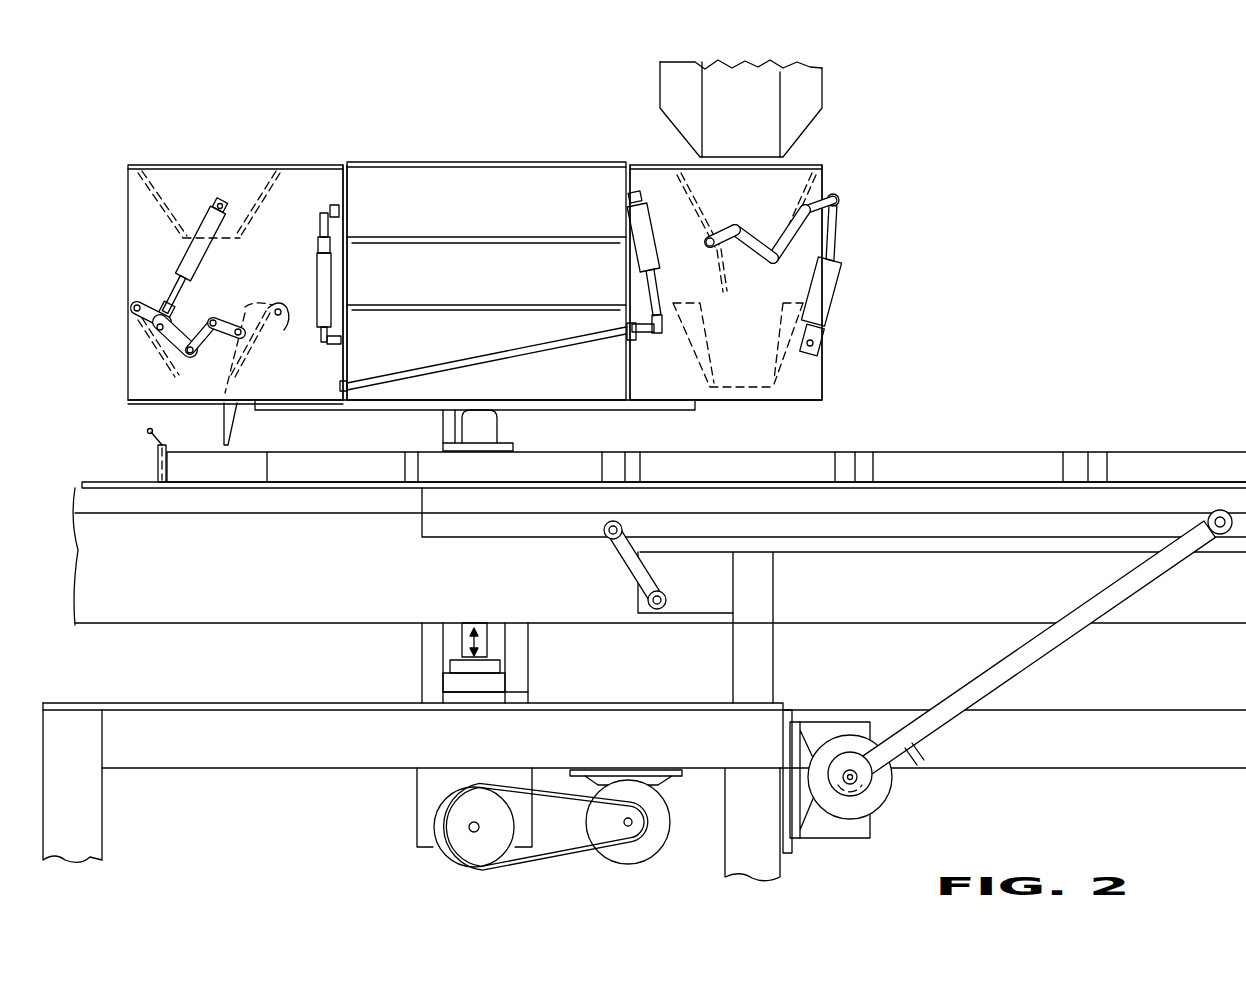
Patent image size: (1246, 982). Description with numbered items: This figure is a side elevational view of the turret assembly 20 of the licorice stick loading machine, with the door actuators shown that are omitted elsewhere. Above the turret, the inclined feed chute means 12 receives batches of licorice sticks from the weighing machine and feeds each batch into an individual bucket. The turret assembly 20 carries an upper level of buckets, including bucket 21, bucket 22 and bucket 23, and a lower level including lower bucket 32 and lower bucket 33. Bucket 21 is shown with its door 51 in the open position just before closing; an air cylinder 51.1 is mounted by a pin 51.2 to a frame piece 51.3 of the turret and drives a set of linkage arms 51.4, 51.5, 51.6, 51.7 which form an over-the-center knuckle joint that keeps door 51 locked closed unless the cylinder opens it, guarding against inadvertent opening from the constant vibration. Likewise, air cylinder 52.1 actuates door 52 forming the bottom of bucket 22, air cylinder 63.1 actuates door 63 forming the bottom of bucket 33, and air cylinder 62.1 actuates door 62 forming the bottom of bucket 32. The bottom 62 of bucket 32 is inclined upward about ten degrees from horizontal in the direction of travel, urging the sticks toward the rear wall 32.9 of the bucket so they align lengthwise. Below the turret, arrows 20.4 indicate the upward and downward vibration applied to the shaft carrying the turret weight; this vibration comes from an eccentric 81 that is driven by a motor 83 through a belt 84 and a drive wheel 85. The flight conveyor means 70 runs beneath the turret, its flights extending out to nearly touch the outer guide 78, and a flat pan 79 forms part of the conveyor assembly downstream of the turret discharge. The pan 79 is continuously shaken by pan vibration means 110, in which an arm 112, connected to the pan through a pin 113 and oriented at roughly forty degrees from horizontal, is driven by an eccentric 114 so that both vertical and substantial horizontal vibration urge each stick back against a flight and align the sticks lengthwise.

The inclined feed chute means 12 is at (814, 101).
The turret assembly 20 is at (513, 279).
The arrows indicating vibration direction 20.4 is at (487, 648).
The bucket 21 is at (812, 180).
The bucket 22 is at (469, 177).
The bucket 23 is at (278, 184).
The lower bucket 32 is at (456, 307).
The rear wall of bucket 32.9 is at (344, 356).
The lower bucket 33 is at (280, 334).
The door 51 is at (775, 267).
The air cylinder 51.1 is at (832, 282).
The pin 51.2 is at (824, 343).
The frame piece 51.3 is at (818, 385).
The linkage arm 51.4 is at (835, 195).
The linkage arm 51.5 is at (800, 229).
The linkage arm 51.6 is at (752, 236).
The linkage arm 51.7 is at (712, 238).
The door 52 is at (460, 237).
The air cylinder 52.1 is at (318, 270).
The door 62 is at (441, 364).
The air cylinder 62.1 is at (653, 258).
The door 63 is at (238, 425).
The air cylinder 63.1 is at (192, 278).
The flight conveyor means 70 is at (1036, 444).
The outer guide 78 is at (156, 463).
The flat pan 79 is at (343, 472).
The eccentric 81 is at (472, 833).
The motor 83 is at (650, 845).
The belt 84 is at (564, 851).
The drive wheel 85 is at (443, 827).
The pan vibration means 110 is at (1011, 674).
The arm 112 is at (1060, 640).
The pin 113 is at (1220, 536).
The eccentric 114 is at (863, 780).